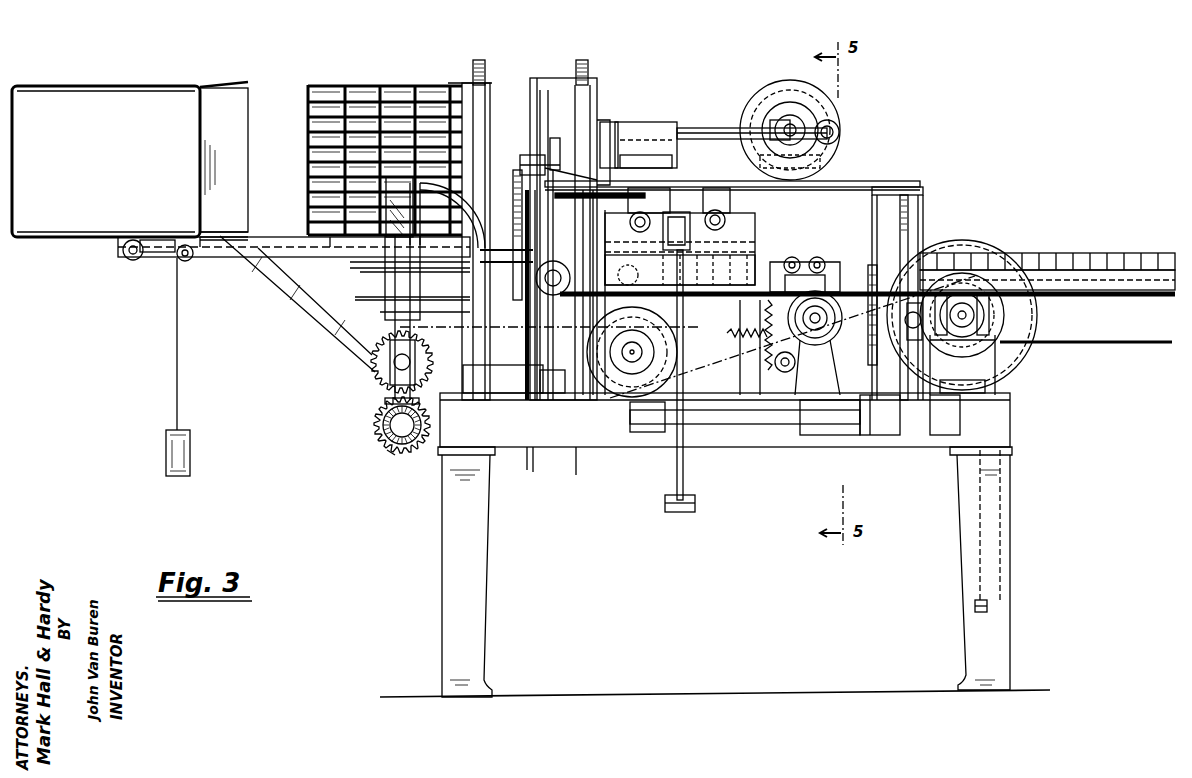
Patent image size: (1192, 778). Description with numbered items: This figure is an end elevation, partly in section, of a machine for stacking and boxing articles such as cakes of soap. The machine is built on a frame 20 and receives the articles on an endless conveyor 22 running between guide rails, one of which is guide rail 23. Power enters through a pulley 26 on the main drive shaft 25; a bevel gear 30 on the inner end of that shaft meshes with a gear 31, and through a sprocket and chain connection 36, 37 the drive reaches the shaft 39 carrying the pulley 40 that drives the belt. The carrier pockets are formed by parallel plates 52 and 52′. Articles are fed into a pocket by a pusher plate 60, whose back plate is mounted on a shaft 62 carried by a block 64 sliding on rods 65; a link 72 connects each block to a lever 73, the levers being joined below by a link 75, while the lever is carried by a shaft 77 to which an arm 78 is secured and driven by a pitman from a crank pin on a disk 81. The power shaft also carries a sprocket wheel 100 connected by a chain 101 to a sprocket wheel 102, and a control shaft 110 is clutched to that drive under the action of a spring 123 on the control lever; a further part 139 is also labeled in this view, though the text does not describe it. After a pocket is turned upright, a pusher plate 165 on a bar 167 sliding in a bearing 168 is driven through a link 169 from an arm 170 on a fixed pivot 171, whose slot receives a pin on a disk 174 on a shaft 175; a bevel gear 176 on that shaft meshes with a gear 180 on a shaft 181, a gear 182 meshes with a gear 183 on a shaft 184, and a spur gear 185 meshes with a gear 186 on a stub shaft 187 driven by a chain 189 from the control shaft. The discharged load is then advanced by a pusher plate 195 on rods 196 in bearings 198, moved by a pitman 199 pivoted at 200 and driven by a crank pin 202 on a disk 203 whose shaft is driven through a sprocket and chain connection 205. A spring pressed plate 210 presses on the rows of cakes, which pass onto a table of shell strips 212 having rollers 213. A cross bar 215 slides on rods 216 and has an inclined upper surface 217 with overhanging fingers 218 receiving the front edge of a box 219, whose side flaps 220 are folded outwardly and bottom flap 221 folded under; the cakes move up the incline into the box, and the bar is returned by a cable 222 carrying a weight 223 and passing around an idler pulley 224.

The frame 20 is at (755, 447).
The conveyor 22 is at (1092, 342).
The guide rail 23 is at (1110, 270).
The main drive shaft 25 is at (990, 332).
The pulley 26 is at (960, 242).
The bevel gear 30 is at (975, 295).
The gear 31 is at (985, 372).
The sprocket and chain connection 36 is at (985, 310).
The sprocket and chain connection 37 is at (925, 440).
The shaft 39 is at (845, 270).
The pulley 40 is at (775, 345).
The plate 52 is at (515, 490).
The plate 52′ is at (585, 493).
The pusher plate 60 is at (755, 265).
The shaft 62 is at (735, 245).
The block 64 is at (690, 215).
The rod 65 is at (720, 215).
The link 72 is at (675, 212).
The lever 73 is at (683, 468).
The link 75 is at (695, 503).
The shaft 77 is at (655, 432).
The arm 78 is at (865, 435).
The disk 81 is at (870, 265).
The sprocket wheel 100 is at (968, 300).
The chain 101 is at (930, 245).
The sprocket wheel 102 is at (628, 375).
The shaft 110 is at (527, 470).
The spring 123 is at (785, 345).
The roller carriage 139 is at (810, 258).
The pusher plate 165 is at (545, 90).
The bar 167 is at (560, 120).
The bearing 168 is at (560, 150).
The link 169 is at (548, 160).
The arm 170 is at (505, 393).
The fixed pivot 171 is at (548, 393).
The disk 174 is at (515, 180).
The shaft 175 is at (445, 238).
The bevel gear 176 is at (455, 185).
The gear 180 is at (355, 264).
The shaft 181 is at (365, 292).
The gear 182 is at (380, 410).
The gear 183 is at (387, 420).
The shaft 184 is at (403, 445).
The spur gear 185 is at (392, 455).
The gear 186 is at (375, 368).
The stub shaft 187 is at (425, 293).
The chain 189 is at (478, 330).
The pusher plate 195 is at (603, 120).
The rod 196 is at (700, 128).
The bearing 198 is at (660, 122).
The pitman 199 is at (785, 128).
The pivot 200 is at (612, 125).
The crank pin 202 is at (838, 132).
The disk 203 is at (795, 145).
The sprocket and chain connection 205 is at (790, 80).
The spring pressed plate 210 is at (490, 83).
The shell strips 212 is at (290, 290).
The roller 213 is at (123, 258).
The cross bar 215 is at (205, 232).
The rod 216 is at (312, 258).
The inclined upper surface 217 is at (210, 234).
The overhanging finger 218 is at (205, 230).
The box 219 is at (185, 100).
The side flap 220 is at (252, 88).
The bottom flap 221 is at (160, 255).
The cable 222 is at (178, 342).
The weight 223 is at (192, 440).
The idler pulley 224 is at (190, 260).